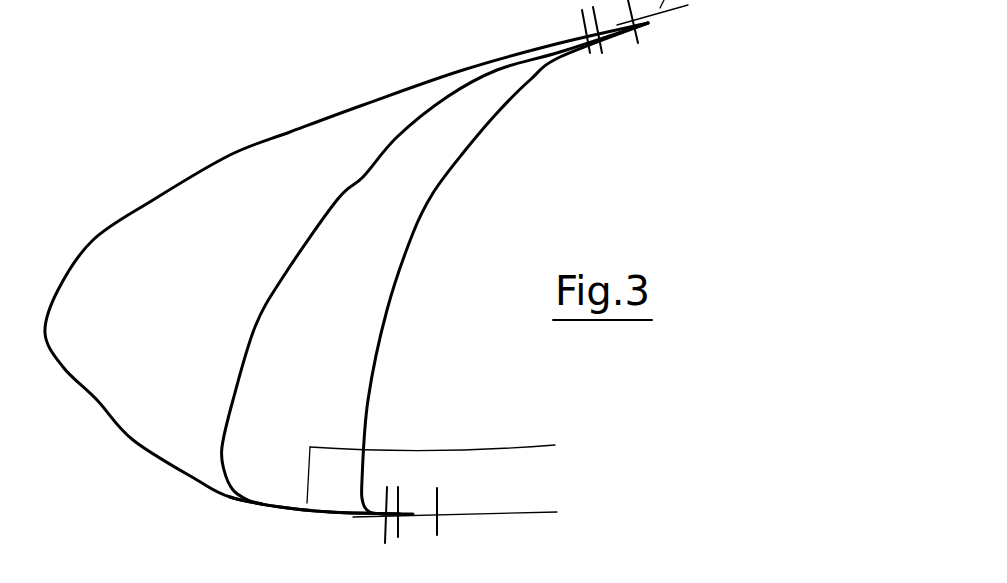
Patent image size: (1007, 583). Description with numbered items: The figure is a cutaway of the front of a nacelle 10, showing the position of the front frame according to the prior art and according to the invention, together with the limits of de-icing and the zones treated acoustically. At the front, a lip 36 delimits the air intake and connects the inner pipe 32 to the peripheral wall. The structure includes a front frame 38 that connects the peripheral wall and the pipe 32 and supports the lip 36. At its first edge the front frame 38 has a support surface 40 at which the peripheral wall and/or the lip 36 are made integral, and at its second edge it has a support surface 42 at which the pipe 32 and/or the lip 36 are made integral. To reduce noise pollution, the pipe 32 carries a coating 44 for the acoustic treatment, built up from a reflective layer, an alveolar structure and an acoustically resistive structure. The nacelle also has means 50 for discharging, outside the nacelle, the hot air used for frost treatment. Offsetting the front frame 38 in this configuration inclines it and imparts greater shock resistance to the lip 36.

The nacelle 10 is at (695, 7).
The pipe 32 is at (557, 512).
The lip 36 is at (228, 155).
The front frame 38 is at (393, 138).
The support surface 40 is at (620, 28).
The support surface 42 is at (388, 526).
The coating for the acoustic treatment 44 is at (497, 473).
The means for discharging hot air 50 is at (313, 519).